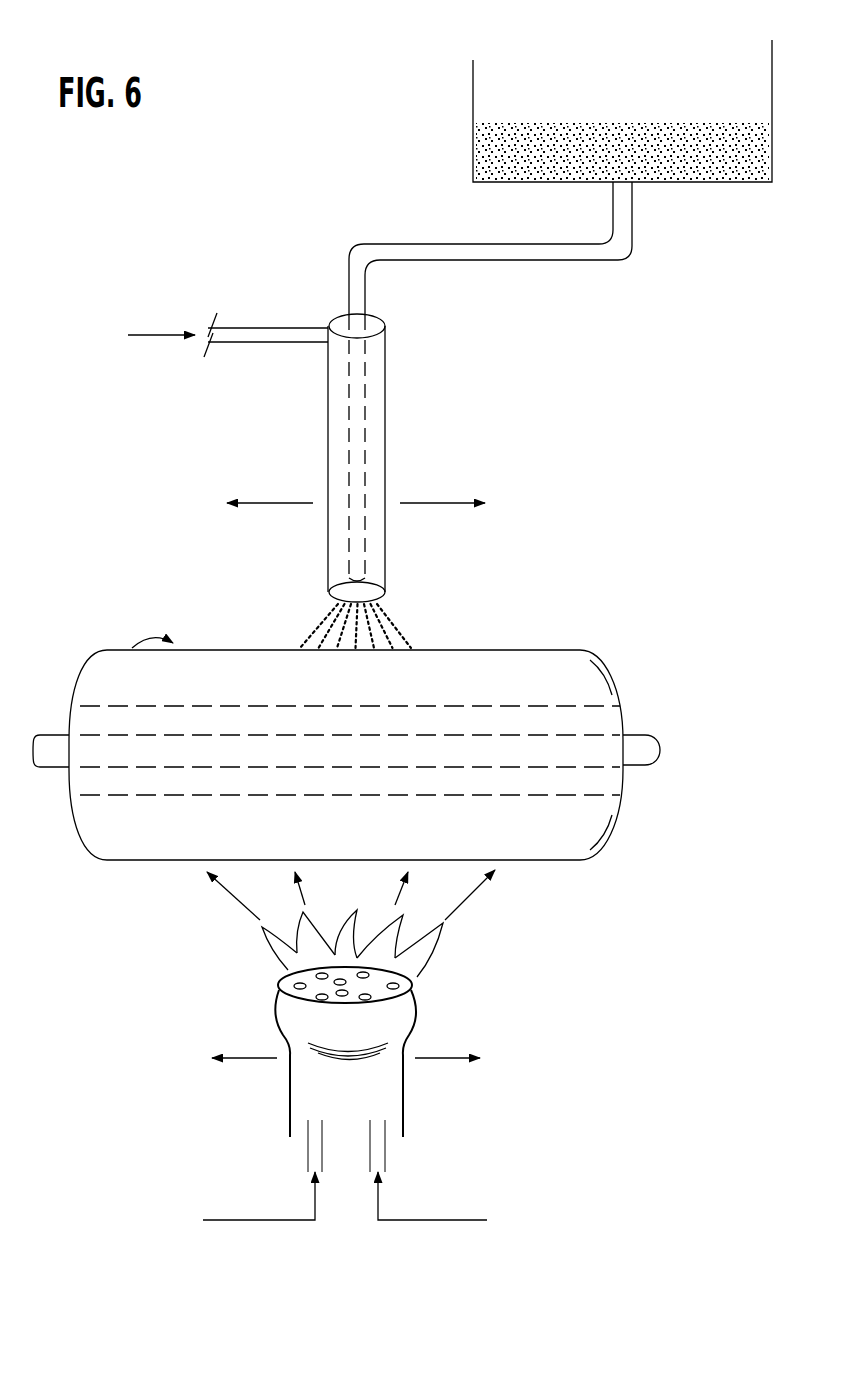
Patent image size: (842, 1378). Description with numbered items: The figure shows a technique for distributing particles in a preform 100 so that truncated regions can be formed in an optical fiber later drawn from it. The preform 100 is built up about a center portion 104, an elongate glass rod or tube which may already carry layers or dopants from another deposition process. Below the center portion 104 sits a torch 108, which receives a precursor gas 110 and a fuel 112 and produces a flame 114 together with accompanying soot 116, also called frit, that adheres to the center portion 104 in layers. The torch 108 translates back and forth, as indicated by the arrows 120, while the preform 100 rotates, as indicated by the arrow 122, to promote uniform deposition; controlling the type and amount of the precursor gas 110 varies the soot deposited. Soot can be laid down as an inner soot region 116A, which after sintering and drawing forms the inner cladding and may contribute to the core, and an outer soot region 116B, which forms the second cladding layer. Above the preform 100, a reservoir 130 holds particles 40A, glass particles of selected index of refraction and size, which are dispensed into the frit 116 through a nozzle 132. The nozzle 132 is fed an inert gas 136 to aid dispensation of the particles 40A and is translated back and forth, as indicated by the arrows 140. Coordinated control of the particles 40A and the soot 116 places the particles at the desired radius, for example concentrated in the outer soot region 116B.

The preform 100 is at (588, 635).
The center portion 104 is at (652, 755).
The torch 108 is at (280, 1003).
The precursor gas 110 is at (240, 1218).
The fuel 112 is at (433, 1218).
The flame 114 is at (415, 958).
The soot 116 is at (230, 895).
The inner soot region 116A is at (600, 780).
The outer soot region 116B is at (591, 678).
The torch translation 120 is at (443, 1060).
The preform rotation 122 is at (108, 678).
The reservoir 130 is at (713, 165).
The nozzle 132 is at (385, 587).
The inert gas 136 is at (262, 332).
The nozzle translation 140 is at (443, 502).
The particles 40A is at (410, 619).